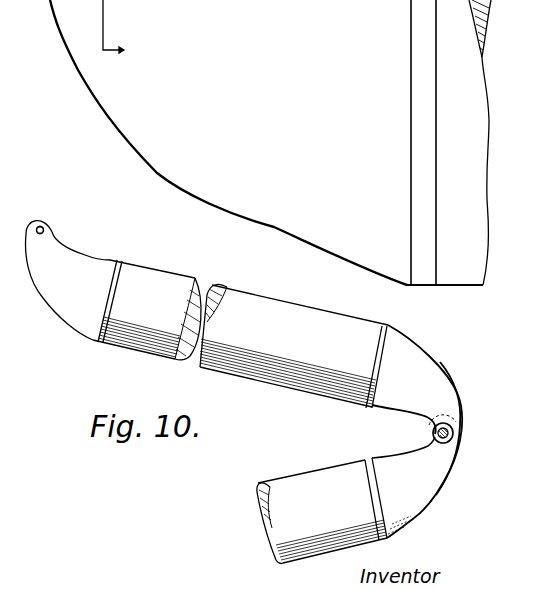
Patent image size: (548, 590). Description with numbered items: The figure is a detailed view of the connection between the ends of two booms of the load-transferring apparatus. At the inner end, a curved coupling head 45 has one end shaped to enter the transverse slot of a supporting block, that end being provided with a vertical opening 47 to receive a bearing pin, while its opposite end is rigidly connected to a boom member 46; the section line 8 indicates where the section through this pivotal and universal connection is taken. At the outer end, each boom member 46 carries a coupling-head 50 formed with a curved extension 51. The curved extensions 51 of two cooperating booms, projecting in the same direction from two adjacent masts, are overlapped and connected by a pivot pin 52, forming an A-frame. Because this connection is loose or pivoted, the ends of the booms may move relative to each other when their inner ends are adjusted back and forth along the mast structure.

The section line 8 is at (118, 29).
The curved coupling head 45 is at (147, 147).
The boom member 46 is at (276, 305).
The vertical opening 47 is at (44, 230).
The coupling-head 50 is at (418, 360).
The curved extension 51 is at (458, 410).
The pivot pin 52 is at (433, 433).